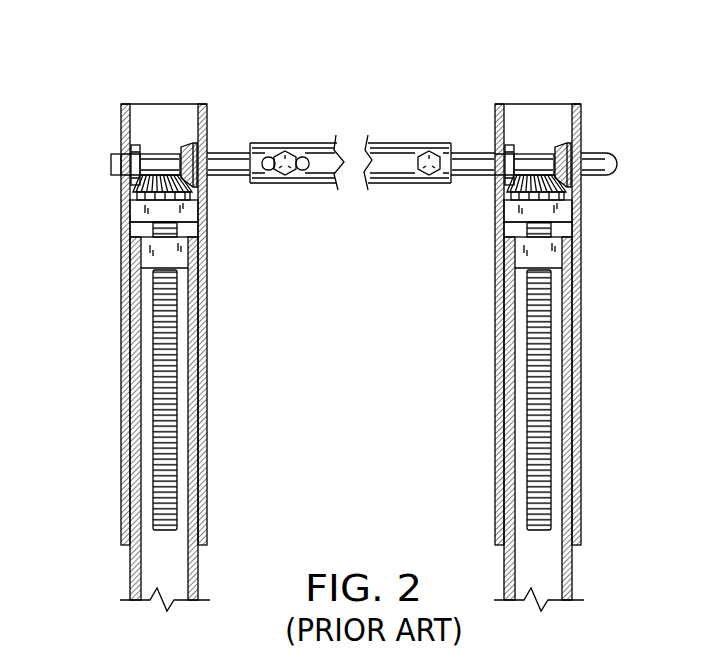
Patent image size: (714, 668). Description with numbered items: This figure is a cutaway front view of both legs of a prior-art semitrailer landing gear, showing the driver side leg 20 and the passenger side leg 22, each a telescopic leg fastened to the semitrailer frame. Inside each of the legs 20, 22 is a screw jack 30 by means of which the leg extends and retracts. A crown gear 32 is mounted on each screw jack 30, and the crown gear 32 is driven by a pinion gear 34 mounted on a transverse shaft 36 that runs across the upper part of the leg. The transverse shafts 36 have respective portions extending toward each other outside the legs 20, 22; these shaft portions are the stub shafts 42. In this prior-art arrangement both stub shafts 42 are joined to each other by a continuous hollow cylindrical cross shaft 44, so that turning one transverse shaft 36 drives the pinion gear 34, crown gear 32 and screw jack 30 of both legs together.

The driver side leg 20 is at (497, 358).
The passenger side leg 22 is at (208, 405).
The screw jack 30 is at (172, 320).
The crown gear 32 is at (132, 193).
The pinion gear 34 is at (178, 143).
The transverse shaft 36 is at (155, 153).
The stub shaft 42 is at (227, 153).
The cross shaft 44 is at (390, 143).